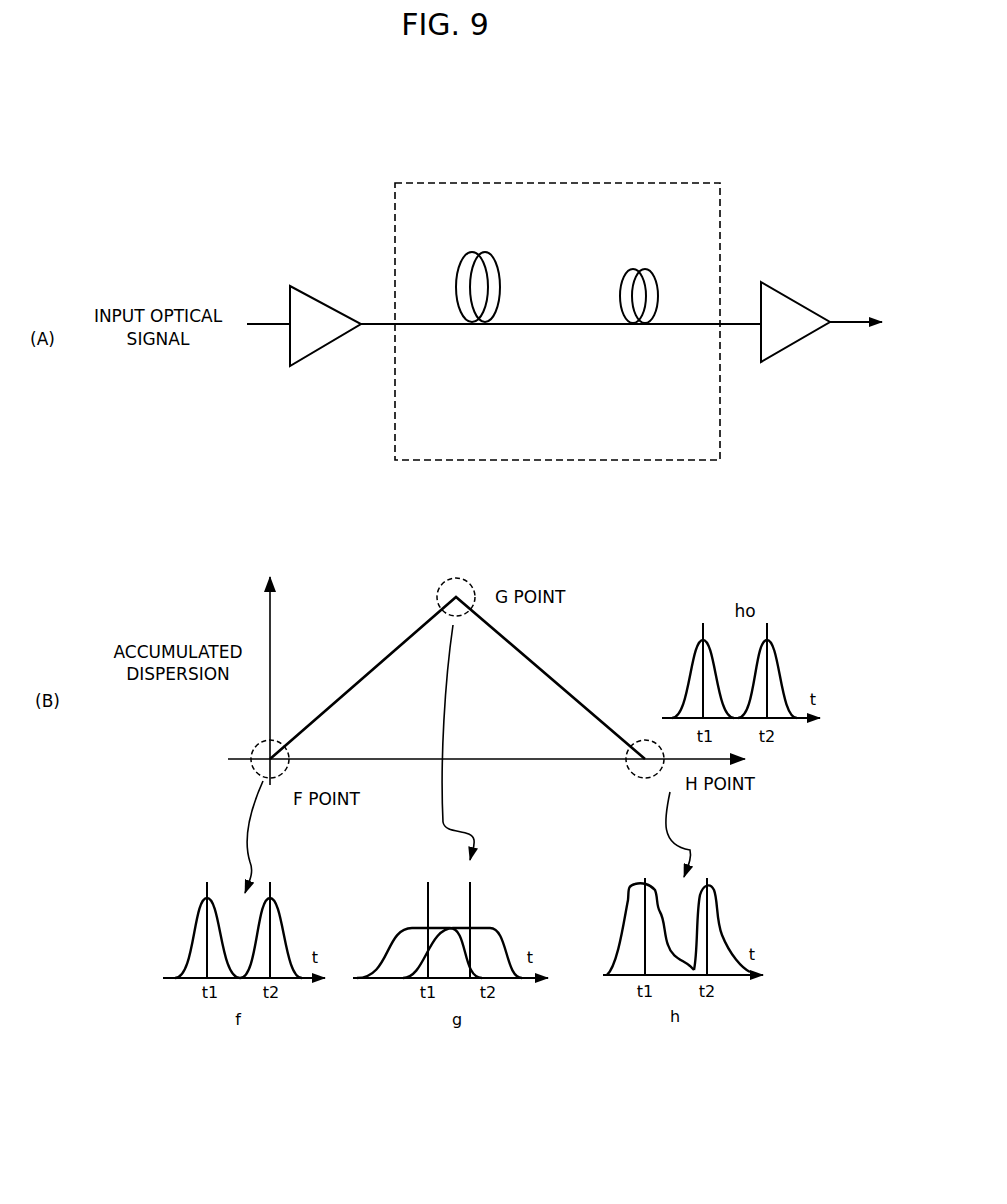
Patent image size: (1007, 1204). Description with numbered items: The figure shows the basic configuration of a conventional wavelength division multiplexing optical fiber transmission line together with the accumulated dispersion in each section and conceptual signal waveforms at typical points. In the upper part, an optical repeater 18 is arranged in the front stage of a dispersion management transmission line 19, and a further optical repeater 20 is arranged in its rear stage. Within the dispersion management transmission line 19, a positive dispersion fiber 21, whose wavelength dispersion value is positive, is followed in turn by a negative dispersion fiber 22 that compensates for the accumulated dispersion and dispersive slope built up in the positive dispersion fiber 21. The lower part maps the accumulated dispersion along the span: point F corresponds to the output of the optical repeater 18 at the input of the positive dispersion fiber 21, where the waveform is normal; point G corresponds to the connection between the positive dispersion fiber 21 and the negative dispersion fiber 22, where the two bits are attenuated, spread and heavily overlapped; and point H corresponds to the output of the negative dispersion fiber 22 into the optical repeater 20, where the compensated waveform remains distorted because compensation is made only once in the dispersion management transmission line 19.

The optical repeater 18 is at (325, 303).
The dispersion management transmission line 19 is at (568, 183).
The optical repeater 20 is at (790, 299).
The positive dispersion fiber 21 is at (478, 252).
The negative dispersion fiber 22 is at (641, 268).